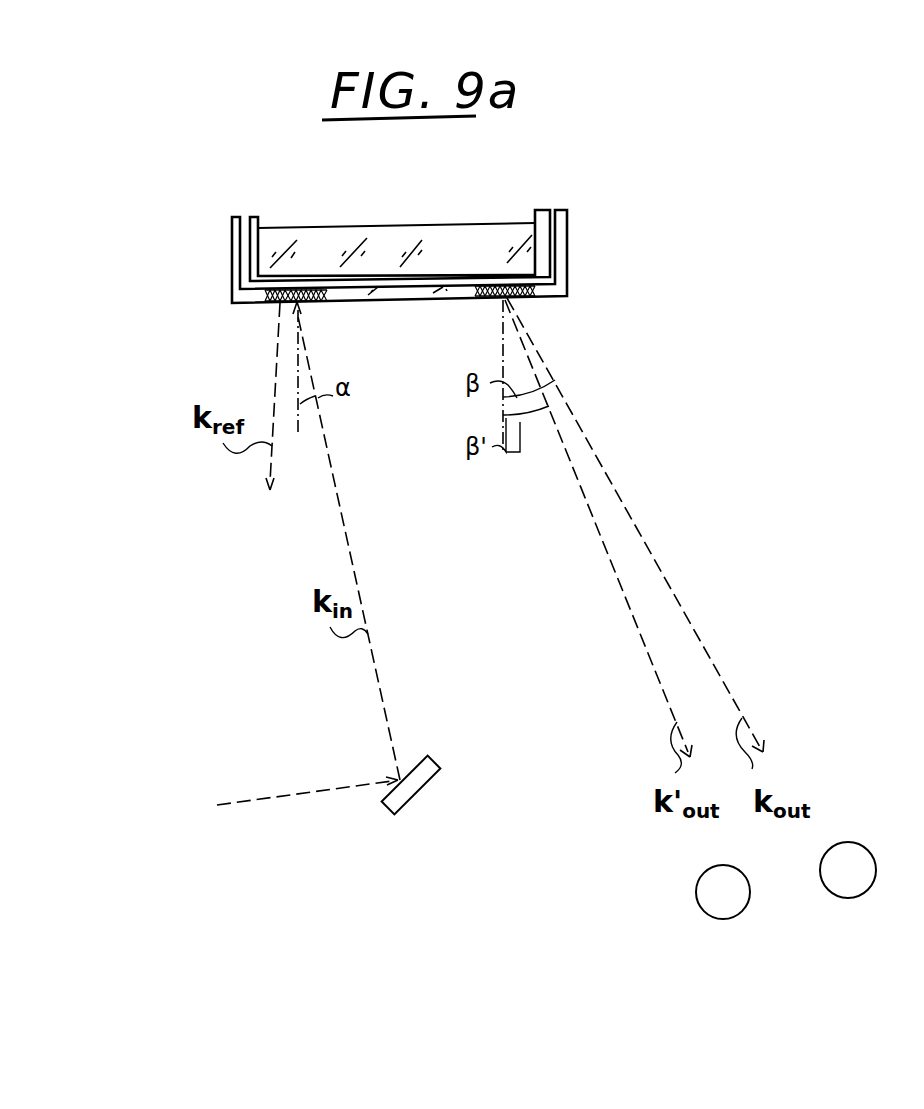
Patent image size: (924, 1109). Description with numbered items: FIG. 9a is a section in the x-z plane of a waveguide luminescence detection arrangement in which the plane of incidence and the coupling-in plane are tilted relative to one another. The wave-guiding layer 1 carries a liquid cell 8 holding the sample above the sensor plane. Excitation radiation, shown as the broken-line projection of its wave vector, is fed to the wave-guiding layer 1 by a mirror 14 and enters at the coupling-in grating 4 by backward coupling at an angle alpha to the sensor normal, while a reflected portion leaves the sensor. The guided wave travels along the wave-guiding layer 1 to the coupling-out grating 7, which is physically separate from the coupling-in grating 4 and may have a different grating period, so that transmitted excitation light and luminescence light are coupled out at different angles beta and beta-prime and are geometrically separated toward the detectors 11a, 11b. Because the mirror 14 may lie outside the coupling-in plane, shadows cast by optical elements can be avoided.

The wave-guiding layer 1 is at (557, 297).
The coupling-in grating 4 is at (298, 290).
The coupling-out grating 7 is at (490, 286).
The liquid cell 8 is at (540, 220).
The mirror 14 is at (427, 773).
The detector 11a is at (712, 898).
The detector 11b is at (855, 876).